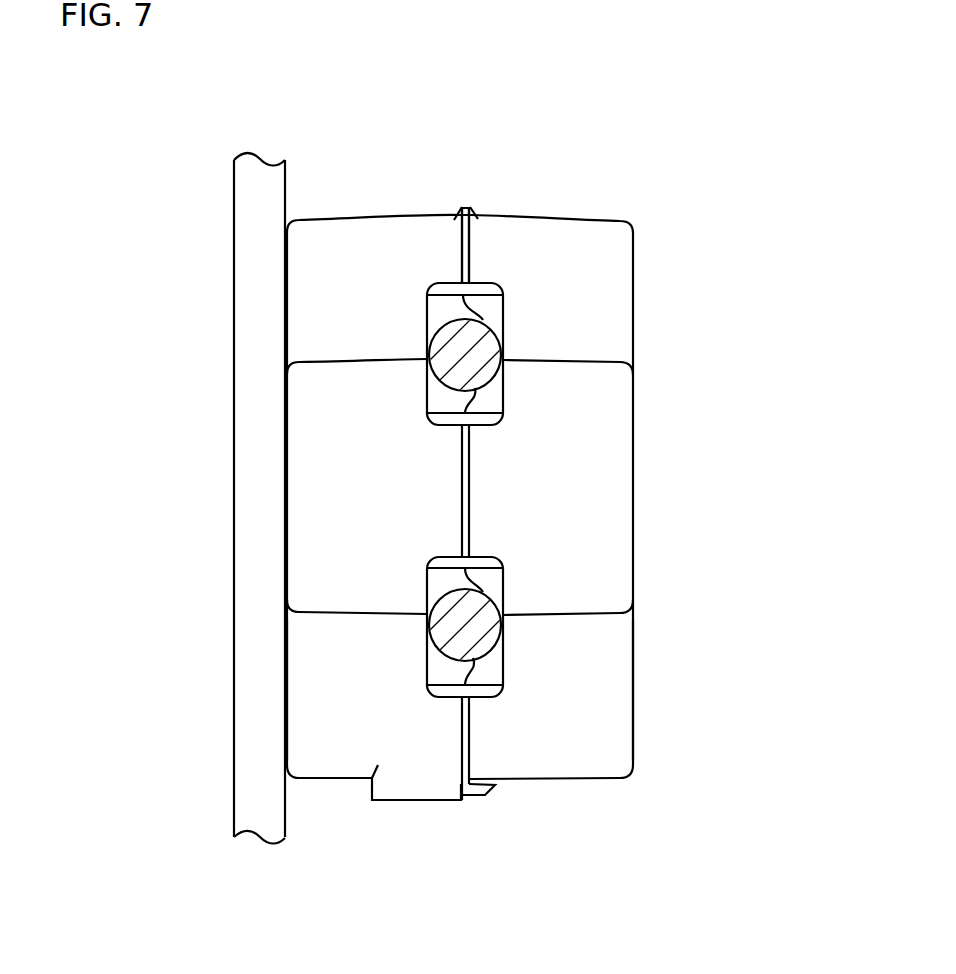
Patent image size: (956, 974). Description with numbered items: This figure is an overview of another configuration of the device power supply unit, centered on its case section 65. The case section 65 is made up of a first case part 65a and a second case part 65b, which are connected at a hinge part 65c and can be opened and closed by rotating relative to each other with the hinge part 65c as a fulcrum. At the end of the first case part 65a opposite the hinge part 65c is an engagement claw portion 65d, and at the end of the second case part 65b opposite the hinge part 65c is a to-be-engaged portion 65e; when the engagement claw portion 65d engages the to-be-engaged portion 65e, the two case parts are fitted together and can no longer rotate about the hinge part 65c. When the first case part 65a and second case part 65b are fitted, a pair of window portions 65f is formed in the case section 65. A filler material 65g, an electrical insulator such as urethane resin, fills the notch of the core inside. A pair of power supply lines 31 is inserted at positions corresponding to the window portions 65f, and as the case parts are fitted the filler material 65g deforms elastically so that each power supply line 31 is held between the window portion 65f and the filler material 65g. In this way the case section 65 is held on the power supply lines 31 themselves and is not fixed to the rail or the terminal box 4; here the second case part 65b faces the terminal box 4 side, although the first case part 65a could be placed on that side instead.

The terminal box 4 is at (255, 280).
The power supply line 31 is at (457, 333).
The case section 65 is at (658, 197).
The first case part 65a is at (617, 720).
The second case part 65b is at (313, 668).
The hinge part 65c is at (464, 206).
The engagement claw portion 65d is at (480, 797).
The to-be-engaged portion 65e is at (395, 787).
The window portion 65f is at (445, 420).
The filler material 65g is at (495, 315).